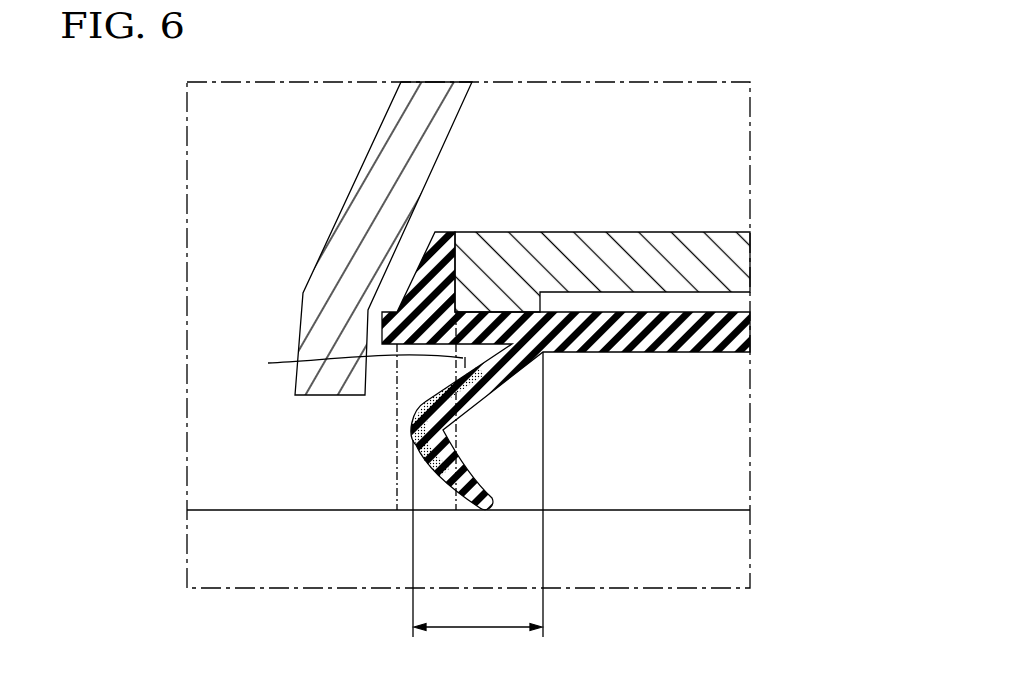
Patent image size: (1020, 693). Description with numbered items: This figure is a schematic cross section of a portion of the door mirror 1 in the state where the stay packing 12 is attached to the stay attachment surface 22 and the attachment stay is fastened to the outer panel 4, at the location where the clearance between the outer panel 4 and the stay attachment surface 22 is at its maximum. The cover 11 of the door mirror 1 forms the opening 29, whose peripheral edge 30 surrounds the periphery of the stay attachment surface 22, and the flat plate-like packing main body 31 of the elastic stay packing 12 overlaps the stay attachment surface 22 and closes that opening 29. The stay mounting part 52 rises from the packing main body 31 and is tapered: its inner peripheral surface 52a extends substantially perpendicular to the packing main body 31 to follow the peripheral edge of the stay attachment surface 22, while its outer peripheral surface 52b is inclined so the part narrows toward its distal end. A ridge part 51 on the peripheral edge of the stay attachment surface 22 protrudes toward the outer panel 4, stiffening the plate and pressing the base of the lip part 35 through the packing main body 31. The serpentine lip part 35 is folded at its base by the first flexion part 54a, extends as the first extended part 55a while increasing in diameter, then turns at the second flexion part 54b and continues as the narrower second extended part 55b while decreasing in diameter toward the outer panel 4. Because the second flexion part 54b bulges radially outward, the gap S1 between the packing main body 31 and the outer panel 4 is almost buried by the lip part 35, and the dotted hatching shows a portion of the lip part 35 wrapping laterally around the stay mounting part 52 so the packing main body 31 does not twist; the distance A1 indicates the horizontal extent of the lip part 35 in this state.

The door mirror 1 is at (355, 238).
The cover 11 is at (341, 180).
The opening 29 is at (366, 383).
The peripheral edge of the opening 30 is at (332, 450).
The stay attachment surface 22 is at (661, 221).
The stay mounting part 52 is at (499, 405).
The inner peripheral surface 52a is at (457, 257).
The outer peripheral surface 52b is at (432, 250).
The first flexion part 54a is at (543, 353).
The second flexion part 54b is at (418, 426).
The first extended part 55a is at (487, 402).
The second extended part 55b is at (462, 495).
The lip part 35 is at (437, 489).
The packing main body 31 is at (712, 353).
The ridge part 51 is at (540, 302).
The stay packing 12 is at (683, 366).
The outer panel 4 is at (712, 510).
The gap S1 is at (352, 362).
The distance A1 is at (478, 611).